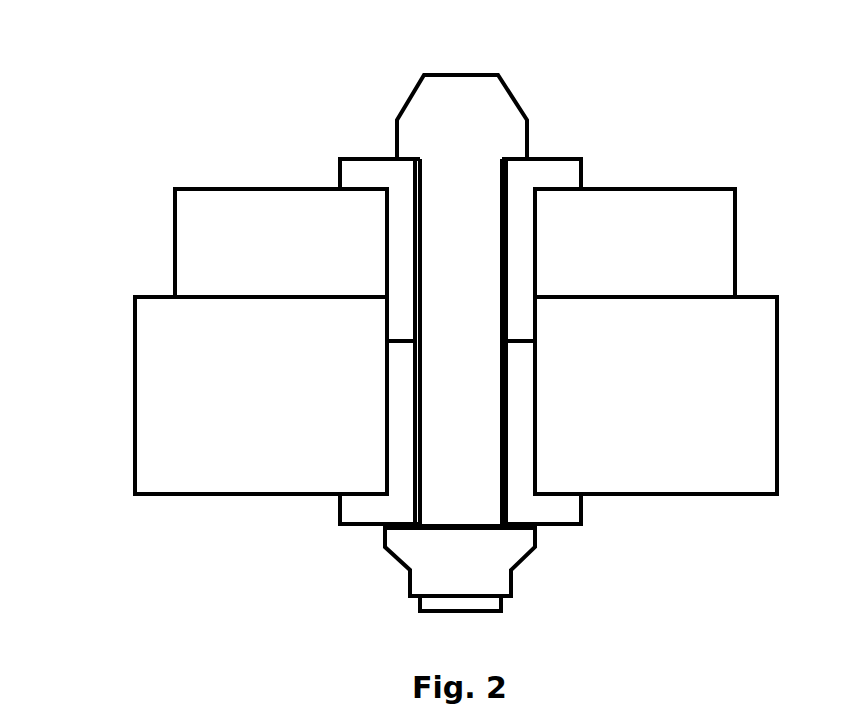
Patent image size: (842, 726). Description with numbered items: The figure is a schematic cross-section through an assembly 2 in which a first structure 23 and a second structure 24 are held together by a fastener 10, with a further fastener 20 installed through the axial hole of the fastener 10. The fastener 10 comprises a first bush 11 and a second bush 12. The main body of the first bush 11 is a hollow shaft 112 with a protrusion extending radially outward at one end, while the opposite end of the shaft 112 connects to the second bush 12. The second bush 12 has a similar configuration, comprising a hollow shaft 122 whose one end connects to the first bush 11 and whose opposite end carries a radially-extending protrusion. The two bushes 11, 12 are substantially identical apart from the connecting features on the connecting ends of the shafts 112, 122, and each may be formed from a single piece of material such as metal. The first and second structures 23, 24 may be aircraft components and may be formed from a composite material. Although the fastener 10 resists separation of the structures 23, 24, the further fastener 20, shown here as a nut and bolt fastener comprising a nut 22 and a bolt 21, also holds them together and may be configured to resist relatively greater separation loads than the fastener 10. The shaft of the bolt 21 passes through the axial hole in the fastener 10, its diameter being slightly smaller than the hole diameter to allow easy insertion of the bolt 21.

The assembly 2 is at (75, 128).
The fastener 10 is at (592, 133).
The first bush 11 is at (352, 176).
The second bush 12 is at (350, 507).
The hollow shaft 112 is at (522, 242).
The hollow shaft 122 is at (529, 425).
The further fastener 20 is at (527, 73).
The bolt 21 is at (418, 108).
The nut 22 is at (488, 553).
The first structure 23 is at (282, 257).
The second structure 24 is at (267, 406).